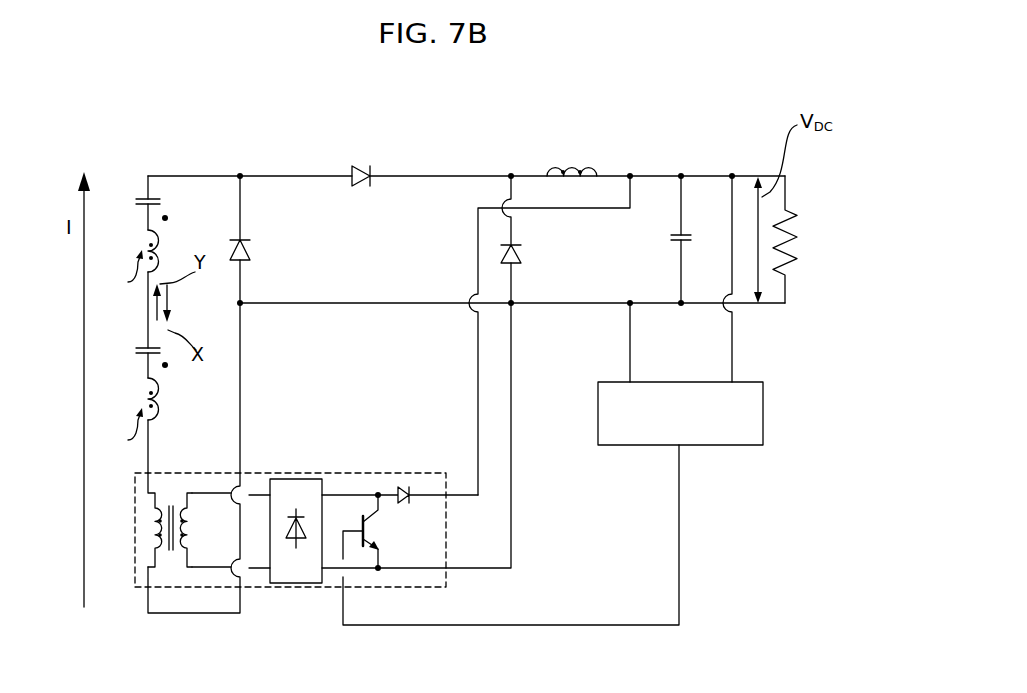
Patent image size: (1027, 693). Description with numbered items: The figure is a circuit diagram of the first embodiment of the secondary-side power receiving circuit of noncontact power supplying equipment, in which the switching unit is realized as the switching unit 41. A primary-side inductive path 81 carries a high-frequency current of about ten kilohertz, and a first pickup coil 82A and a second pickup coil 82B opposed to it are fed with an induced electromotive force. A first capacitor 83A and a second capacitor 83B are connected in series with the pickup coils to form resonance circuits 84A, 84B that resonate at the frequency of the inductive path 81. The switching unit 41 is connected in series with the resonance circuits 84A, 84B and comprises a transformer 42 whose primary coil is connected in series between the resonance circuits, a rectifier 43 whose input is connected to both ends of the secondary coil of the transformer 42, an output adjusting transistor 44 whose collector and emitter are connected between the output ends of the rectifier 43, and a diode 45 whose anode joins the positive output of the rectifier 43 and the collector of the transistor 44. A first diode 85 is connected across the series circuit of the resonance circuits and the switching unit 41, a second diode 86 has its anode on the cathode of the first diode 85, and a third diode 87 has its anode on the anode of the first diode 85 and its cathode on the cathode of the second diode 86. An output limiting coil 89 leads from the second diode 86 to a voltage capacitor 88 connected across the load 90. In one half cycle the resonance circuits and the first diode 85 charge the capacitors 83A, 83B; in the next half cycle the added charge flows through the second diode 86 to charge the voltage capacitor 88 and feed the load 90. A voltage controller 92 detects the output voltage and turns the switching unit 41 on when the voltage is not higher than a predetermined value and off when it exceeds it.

The switching unit 41 is at (405, 470).
The transformer 42 is at (192, 525).
The rectifier 43 is at (300, 479).
The output adjusting transistor 44 is at (362, 518).
The diode 45 is at (410, 505).
The inductive path 81 is at (83, 445).
The first pickup coil 82A is at (159, 252).
The second pickup coil 82B is at (158, 402).
The first capacitor 83A is at (160, 201).
The second capacitor 83B is at (137, 349).
The resonance circuit 84A is at (117, 269).
The resonance circuit 84B is at (117, 427).
The first diode 85 is at (250, 240).
The second diode 86 is at (362, 165).
The third diode 87 is at (522, 252).
The voltage capacitor 88 is at (671, 237).
The output limiting coil 89 is at (582, 163).
The load 90 is at (797, 226).
The voltage controller 92 is at (765, 390).